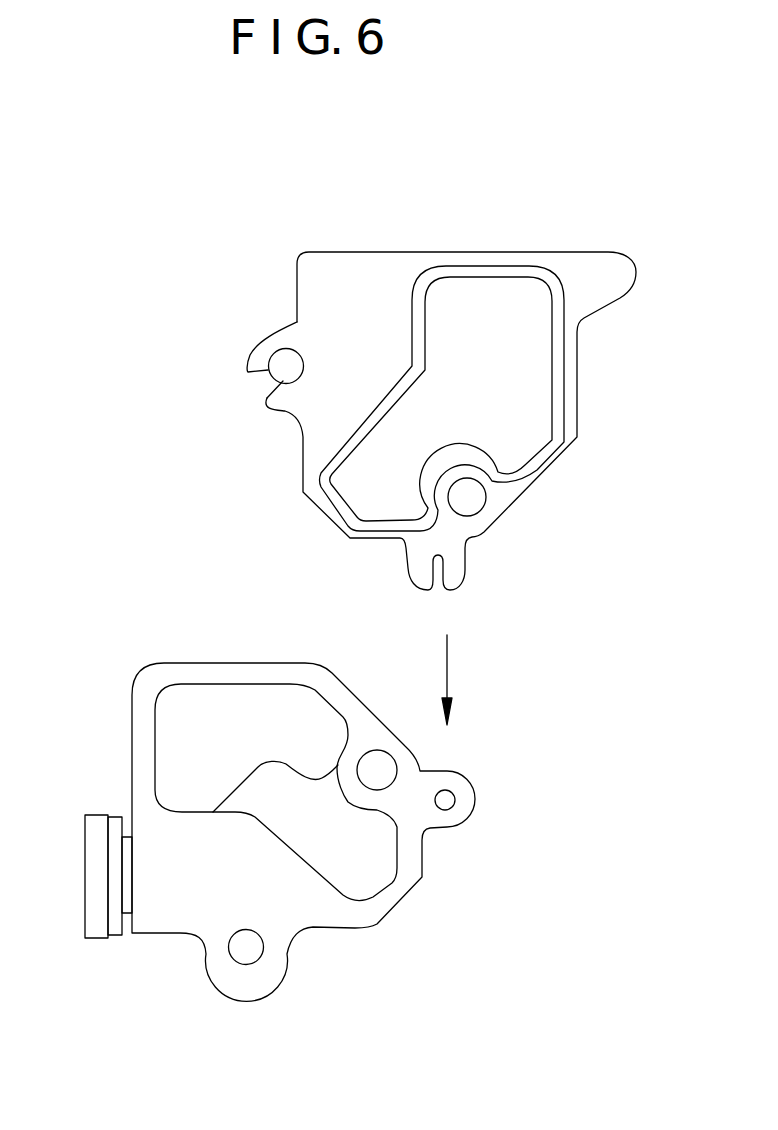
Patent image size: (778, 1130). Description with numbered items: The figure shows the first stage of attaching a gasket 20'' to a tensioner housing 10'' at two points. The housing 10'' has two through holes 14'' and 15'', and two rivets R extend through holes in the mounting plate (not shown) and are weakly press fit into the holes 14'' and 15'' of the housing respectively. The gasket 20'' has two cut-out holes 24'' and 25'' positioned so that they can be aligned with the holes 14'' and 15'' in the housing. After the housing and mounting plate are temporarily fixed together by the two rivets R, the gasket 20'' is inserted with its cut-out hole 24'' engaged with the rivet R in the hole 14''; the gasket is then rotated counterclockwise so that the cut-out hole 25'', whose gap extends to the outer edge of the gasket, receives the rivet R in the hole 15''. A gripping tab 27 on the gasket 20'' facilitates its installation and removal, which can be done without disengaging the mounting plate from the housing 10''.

The gasket 20'' is at (436, 396).
The gripping tab 27 is at (612, 283).
The cut-out hole 25'' is at (256, 409).
The cut-out hole 24'' is at (465, 595).
The housing 10'' is at (269, 854).
The through hole 14'' is at (467, 843).
The through hole 15'' is at (212, 988).
The rivet R is at (452, 795).